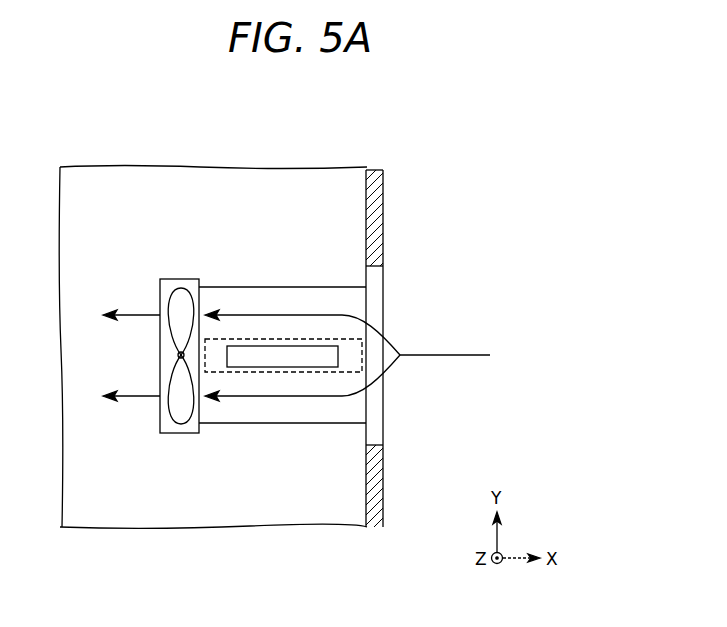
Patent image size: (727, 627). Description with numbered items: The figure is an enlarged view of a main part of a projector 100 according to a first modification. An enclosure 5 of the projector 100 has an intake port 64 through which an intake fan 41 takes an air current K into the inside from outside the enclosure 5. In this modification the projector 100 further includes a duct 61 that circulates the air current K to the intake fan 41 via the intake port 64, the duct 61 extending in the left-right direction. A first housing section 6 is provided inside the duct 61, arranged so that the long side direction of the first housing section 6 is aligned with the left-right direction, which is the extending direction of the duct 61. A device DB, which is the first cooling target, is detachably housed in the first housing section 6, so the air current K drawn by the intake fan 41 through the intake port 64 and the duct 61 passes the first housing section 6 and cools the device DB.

The projector 100 is at (336, 131).
The enclosure 5 is at (384, 208).
The duct 61 is at (238, 286).
The intake port 64 is at (371, 445).
The intake fan 41 is at (178, 434).
The first housing section 6 is at (250, 374).
The device DB is at (296, 357).
The air current K is at (447, 355).